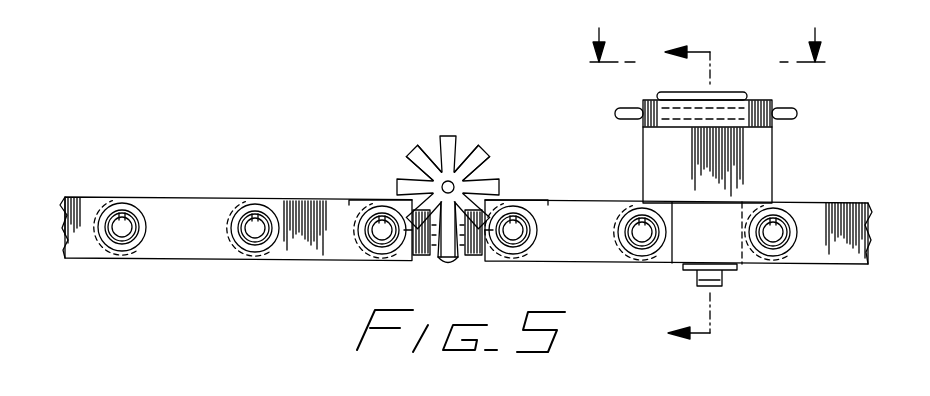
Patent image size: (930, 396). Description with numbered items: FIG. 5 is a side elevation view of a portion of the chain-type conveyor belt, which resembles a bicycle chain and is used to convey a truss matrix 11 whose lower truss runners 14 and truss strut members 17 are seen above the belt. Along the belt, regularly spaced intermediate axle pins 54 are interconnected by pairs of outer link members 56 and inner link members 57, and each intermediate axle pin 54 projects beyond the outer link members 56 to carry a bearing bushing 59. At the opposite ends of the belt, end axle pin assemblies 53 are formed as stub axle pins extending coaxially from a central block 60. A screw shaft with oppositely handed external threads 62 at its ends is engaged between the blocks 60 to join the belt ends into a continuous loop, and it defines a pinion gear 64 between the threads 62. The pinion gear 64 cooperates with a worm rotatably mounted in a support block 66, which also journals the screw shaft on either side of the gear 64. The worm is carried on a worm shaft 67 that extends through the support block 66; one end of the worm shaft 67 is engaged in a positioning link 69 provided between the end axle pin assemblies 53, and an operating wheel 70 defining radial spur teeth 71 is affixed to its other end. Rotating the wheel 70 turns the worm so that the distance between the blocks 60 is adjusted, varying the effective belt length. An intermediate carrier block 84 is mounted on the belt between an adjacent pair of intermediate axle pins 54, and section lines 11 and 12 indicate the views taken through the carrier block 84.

The matrix 11 is at (703, 47).
The section line 12- 12 is at (686, 195).
The lower truss runner 14 is at (623, 110).
The truss strut member 17 is at (740, 94).
The end axle pin assembly 53 is at (517, 227).
The intermediate axle pin 54 is at (127, 235).
The outer link member 56 is at (328, 212).
The inner link member 57 is at (190, 207).
The bearing bushing 59 is at (133, 215).
The central block 60 is at (410, 217).
The external threads 62 is at (430, 257).
The pinion gear 64 is at (463, 243).
The support block 66 is at (437, 258).
The worm shaft 67 is at (455, 187).
The positioning link 69 is at (420, 173).
The operating wheel 70 is at (428, 160).
The radial spur teeth 71 is at (460, 160).
The intermediate carrier block 84 is at (762, 161).